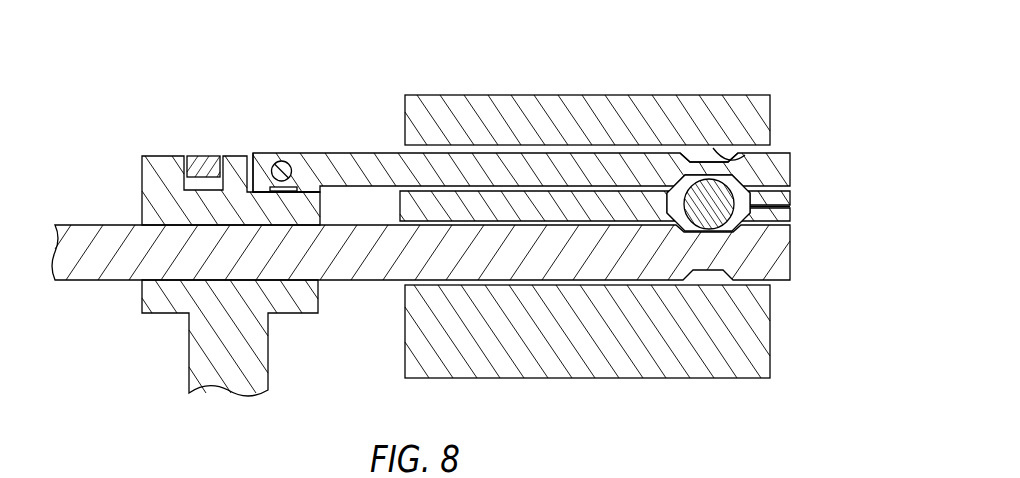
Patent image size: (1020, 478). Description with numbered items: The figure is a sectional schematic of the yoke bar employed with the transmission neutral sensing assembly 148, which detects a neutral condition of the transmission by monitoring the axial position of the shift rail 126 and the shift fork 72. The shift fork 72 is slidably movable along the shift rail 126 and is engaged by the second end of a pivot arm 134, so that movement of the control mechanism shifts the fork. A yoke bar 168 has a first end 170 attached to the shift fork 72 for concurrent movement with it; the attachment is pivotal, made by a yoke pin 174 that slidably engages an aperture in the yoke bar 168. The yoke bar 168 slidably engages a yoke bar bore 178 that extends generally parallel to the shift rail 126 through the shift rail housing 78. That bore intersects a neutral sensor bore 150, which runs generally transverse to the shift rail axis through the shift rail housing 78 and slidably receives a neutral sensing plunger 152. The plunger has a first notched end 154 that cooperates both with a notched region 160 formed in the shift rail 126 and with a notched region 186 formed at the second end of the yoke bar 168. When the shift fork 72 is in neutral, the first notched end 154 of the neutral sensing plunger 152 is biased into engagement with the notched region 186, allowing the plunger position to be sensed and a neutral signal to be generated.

The transmission neutral sensing assembly 148 is at (592, 224).
The shift rail housing 78 is at (752, 95).
The notched region 186 is at (707, 163).
The yoke bar bore 178 is at (745, 156).
The first notched end 154 is at (760, 206).
The neutral sensing plunger 152 is at (738, 208).
The neutral sensor bore 150 is at (742, 226).
The notched region 160 is at (710, 270).
The shift rail 126 is at (78, 283).
The shift fork 72 is at (268, 360).
The pivot arm 134 is at (203, 155).
The first end 170 is at (277, 152).
The yoke pin 174 is at (289, 162).
The yoke bar 168 is at (365, 152).